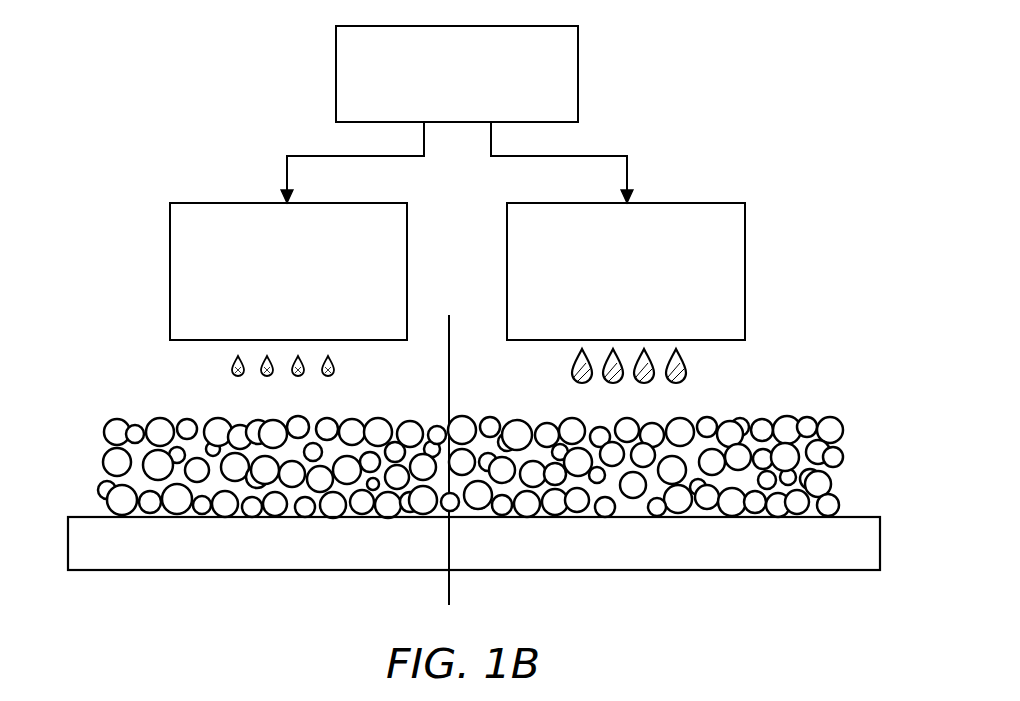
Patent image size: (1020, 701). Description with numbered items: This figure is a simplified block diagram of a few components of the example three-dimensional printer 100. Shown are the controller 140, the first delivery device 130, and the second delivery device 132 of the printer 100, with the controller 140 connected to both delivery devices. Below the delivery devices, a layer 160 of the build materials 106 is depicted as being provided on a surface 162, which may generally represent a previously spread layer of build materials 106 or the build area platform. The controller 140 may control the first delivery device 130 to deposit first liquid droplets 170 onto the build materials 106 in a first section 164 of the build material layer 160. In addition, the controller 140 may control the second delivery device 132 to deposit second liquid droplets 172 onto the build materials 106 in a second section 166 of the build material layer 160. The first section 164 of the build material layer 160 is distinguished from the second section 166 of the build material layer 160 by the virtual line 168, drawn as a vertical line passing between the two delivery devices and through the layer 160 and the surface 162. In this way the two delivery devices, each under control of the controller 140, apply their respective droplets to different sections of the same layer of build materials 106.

The 3D printer 100 is at (205, 92).
The controller 140 is at (476, 99).
The first delivery device 130 is at (307, 311).
The second delivery device 132 is at (645, 311).
The layer of build materials 160 is at (460, 484).
The surface 162 is at (152, 568).
The first section 164 is at (460, 500).
The second section 166 is at (500, 500).
The virtual line 168 is at (449, 356).
The first liquid droplets 170 is at (231, 369).
The second liquid droplets 172 is at (688, 366).
The build materials 106 is at (578, 512).